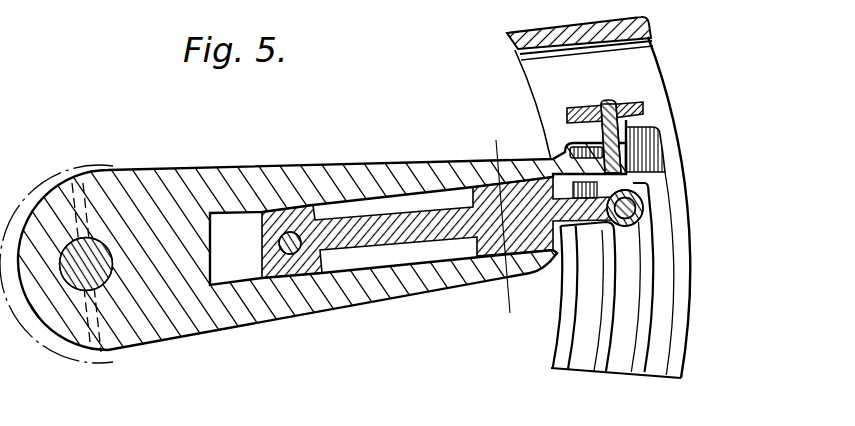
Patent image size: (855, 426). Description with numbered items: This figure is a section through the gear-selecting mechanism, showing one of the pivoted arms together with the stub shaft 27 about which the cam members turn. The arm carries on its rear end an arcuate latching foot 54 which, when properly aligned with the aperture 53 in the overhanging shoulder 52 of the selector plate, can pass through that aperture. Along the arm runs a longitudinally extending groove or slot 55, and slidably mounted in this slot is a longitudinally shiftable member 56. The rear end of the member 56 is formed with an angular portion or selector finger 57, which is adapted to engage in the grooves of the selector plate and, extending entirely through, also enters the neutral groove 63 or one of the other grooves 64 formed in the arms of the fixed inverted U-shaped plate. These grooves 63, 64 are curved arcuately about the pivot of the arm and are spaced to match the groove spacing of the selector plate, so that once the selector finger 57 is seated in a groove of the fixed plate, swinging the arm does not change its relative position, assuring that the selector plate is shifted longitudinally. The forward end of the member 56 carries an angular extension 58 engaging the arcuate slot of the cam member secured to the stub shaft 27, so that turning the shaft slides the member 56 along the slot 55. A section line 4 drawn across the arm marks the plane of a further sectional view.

The section line 4- 4 is at (501, 228).
The stub shaft 27 is at (78, 277).
The overhanging shoulder 52 is at (626, 102).
The aperture 53 is at (580, 108).
The arcuate latching foot 54 is at (620, 117).
The longitudinally extending groove or slot 55 is at (243, 213).
The longitudinally shiftable member 56 is at (382, 230).
The selector finger 57 is at (648, 203).
The angular extension 58 is at (290, 232).
The neutral groove 63 is at (632, 248).
The grooves 64 is at (668, 297).